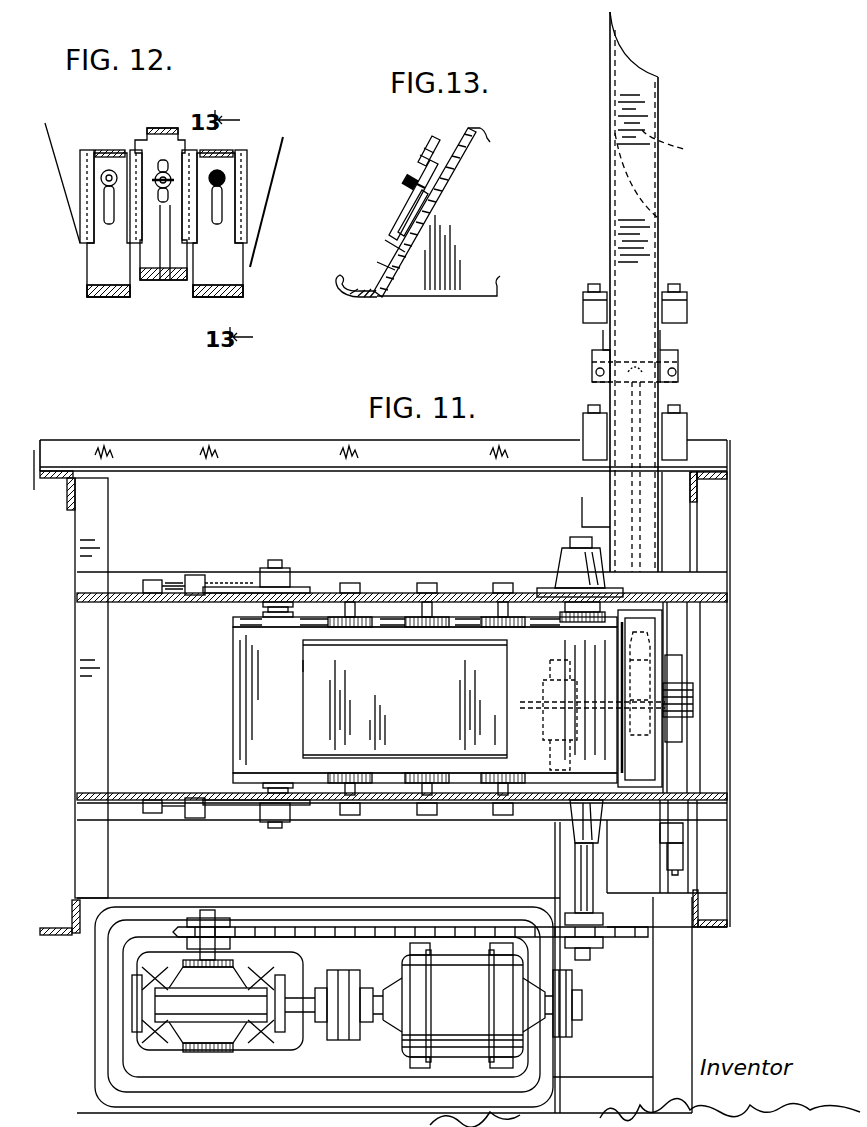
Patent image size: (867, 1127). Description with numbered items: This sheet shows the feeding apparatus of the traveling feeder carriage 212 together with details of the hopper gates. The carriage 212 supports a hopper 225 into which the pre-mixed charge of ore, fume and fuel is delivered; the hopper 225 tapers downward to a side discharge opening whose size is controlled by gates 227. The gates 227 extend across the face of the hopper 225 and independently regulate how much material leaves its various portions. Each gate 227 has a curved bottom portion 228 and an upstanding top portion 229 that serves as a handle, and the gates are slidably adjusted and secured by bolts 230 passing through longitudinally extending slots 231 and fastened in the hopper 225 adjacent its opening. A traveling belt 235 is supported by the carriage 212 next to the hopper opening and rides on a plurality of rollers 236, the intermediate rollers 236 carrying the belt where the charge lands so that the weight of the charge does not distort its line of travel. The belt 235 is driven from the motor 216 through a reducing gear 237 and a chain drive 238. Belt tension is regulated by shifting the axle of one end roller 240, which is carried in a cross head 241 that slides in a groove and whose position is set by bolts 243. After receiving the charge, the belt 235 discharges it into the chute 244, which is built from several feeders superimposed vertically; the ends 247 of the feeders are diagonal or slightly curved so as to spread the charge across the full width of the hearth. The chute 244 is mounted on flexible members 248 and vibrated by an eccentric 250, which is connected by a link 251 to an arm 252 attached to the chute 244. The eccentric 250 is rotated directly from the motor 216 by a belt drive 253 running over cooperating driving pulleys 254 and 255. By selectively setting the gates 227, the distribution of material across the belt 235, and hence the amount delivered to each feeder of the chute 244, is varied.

In FIG. 11, the traveling feeder carriage 212 is at (308, 448).
In FIG. 11, the motor 216 is at (468, 1005).
In FIG. 13, the hopper 225 is at (473, 288).
In FIG. 11, the hopper 225 is at (305, 665).
In FIG. 12, the gates 227 is at (155, 250).
In FIG. 13, the gates 227 is at (386, 248).
In FIG. 12, the curved bottom portion 228 is at (233, 292).
In FIG. 13, the curved bottom portion 228 is at (340, 288).
In FIG. 12, the upstanding top portion 229 is at (133, 115).
In FIG. 13, the upstanding top portion 229 is at (420, 156).
In FIG. 12, the bolts 230 is at (222, 178).
In FIG. 13, the bolts 230 is at (405, 183).
In FIG. 12, the slots 231 is at (218, 205).
In FIG. 13, the slots 231 is at (405, 200).
In FIG. 11, the traveling belt 235 is at (245, 712).
In FIG. 11, the rollers 236 is at (487, 618).
In FIG. 11, the reducing gear 237 is at (223, 1006).
In FIG. 11, the chain drive 238 is at (378, 925).
In FIG. 11, the end roller 240 is at (240, 621).
In FIG. 11, the cross head 241 is at (282, 574).
In FIG. 11, the bolts 243 is at (171, 580).
In FIG. 11, the chute 244 is at (655, 640).
In FIG. 11, the ends of feeders 247 is at (640, 62).
In FIG. 11, the flexible members 248 is at (592, 440).
In FIG. 11, the eccentric 250 is at (695, 697).
In FIG. 11, the link 251 is at (640, 490).
In FIG. 11, the arm 252 is at (680, 372).
In FIG. 11, the belt drive 253 is at (560, 845).
In FIG. 11, the driving pulley 254 is at (555, 720).
In FIG. 11, the driving pulley 255 is at (582, 990).